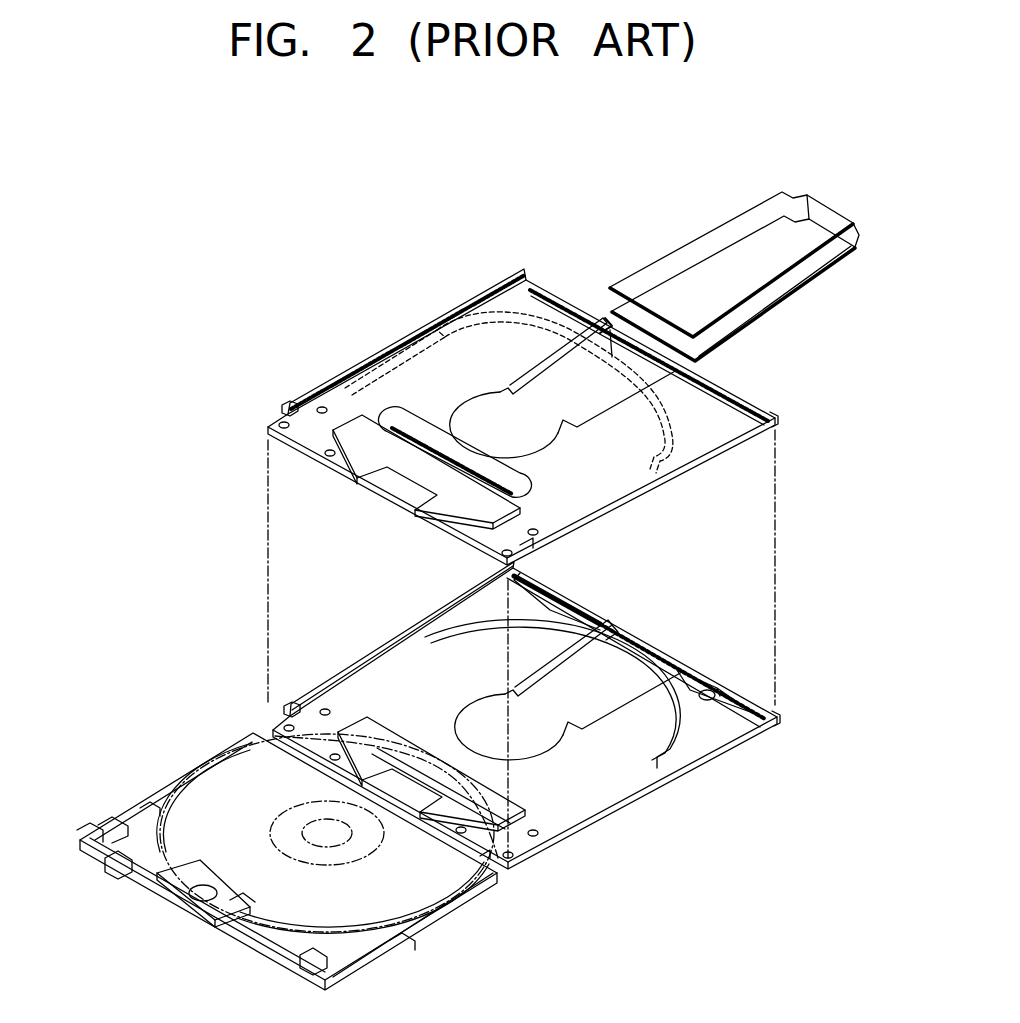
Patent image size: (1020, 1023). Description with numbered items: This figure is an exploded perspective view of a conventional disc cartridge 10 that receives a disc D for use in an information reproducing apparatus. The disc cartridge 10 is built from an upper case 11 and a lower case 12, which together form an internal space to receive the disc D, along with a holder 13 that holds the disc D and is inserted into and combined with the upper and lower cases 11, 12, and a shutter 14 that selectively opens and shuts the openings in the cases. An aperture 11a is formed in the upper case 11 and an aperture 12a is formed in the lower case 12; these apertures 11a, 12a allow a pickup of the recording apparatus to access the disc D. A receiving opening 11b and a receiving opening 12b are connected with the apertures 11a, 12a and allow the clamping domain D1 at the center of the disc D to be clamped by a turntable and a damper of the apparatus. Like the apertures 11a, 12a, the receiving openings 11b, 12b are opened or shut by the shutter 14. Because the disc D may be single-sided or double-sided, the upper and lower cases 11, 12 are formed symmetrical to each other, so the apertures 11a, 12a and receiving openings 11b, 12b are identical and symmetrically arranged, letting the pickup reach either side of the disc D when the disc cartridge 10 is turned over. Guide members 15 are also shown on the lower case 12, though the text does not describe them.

The disc cartridge 10 is at (601, 850).
The upper case 11 is at (523, 407).
The aperture 11a is at (610, 327).
The receiving opening 11b is at (533, 437).
The lower case 12 is at (526, 714).
The aperture 12a is at (623, 668).
The receiving opening 12b is at (528, 742).
The holder 13 is at (197, 910).
The shutter 14 is at (707, 242).
The guide member 15 is at (553, 590).
The disc D is at (270, 757).
The clamping domain D1 is at (287, 818).